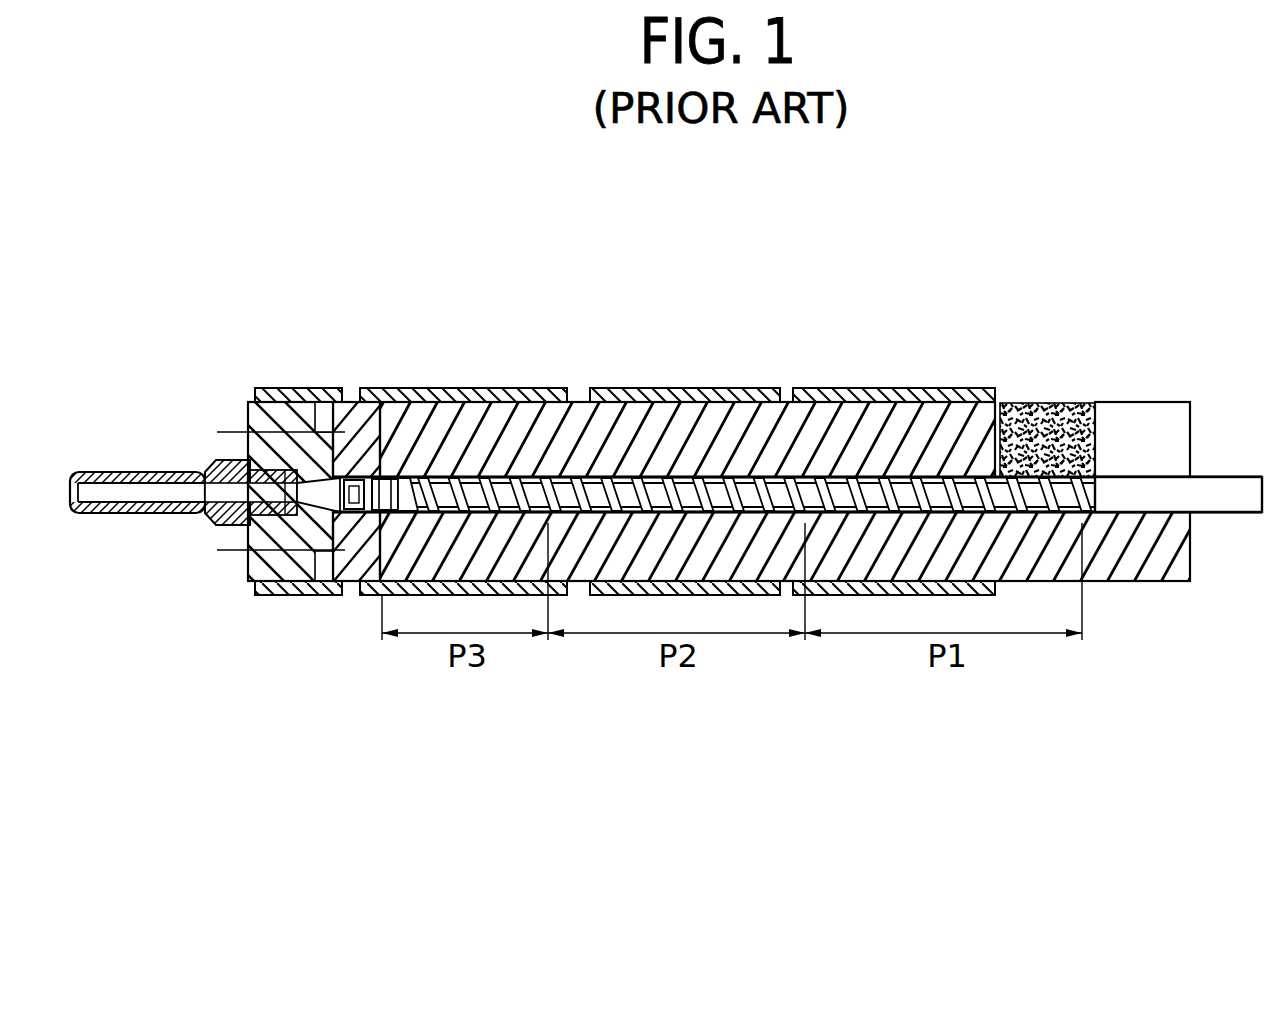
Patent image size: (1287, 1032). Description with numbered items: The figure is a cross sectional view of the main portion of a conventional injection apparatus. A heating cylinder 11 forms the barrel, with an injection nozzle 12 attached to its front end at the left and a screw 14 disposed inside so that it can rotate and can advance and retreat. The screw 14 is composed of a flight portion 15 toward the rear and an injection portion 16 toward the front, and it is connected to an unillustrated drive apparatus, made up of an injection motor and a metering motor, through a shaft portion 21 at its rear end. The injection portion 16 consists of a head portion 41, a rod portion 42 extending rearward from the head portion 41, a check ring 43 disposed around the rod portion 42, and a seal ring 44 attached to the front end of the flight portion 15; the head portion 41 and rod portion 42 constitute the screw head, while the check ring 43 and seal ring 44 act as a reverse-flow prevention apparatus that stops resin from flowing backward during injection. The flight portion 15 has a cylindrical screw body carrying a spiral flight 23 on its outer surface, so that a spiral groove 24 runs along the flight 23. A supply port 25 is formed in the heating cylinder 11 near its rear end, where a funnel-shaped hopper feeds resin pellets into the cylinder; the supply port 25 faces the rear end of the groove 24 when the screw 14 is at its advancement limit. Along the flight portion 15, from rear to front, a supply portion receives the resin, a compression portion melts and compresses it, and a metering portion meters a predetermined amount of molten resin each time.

The heating cylinder 11 is at (746, 392).
The injection nozzle 12 is at (167, 470).
The screw 14 is at (797, 584).
The flight portion 15 is at (598, 522).
The injection portion 16 is at (390, 522).
The shaft portion 21 is at (1240, 475).
The flight 23 is at (857, 522).
The groove 24 is at (1013, 522).
The supply port 25 is at (1077, 403).
The head portion 41 is at (326, 388).
The rod portion 42 is at (357, 514).
The check ring 43 is at (378, 390).
The seal ring 44 is at (450, 400).